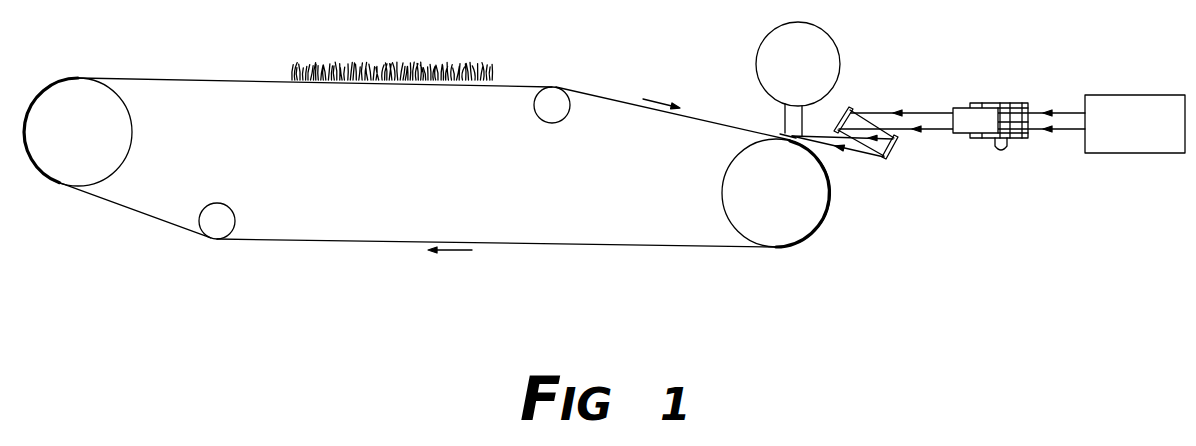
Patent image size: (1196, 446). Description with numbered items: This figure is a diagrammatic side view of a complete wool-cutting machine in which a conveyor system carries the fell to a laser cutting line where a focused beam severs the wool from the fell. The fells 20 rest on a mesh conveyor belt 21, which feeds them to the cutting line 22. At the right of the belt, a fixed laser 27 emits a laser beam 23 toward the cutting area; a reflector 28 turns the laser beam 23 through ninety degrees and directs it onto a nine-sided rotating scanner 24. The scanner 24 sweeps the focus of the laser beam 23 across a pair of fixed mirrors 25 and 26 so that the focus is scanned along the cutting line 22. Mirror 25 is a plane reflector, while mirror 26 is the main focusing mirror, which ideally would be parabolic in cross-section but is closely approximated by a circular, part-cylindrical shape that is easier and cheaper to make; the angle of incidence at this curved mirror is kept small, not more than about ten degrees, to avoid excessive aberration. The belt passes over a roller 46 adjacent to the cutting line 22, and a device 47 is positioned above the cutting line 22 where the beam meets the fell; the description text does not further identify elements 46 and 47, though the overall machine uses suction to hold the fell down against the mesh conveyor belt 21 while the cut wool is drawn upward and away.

The fells 20 is at (400, 67).
The mesh conveyor belt 21 is at (610, 98).
The cutting line 22 is at (776, 128).
The laser beam 23 is at (934, 112).
The rotating scanner 24 is at (1017, 105).
The plane reflector mirror 25 is at (851, 110).
The main focusing mirror 26 is at (895, 148).
The laser 27 is at (1123, 139).
The reflector 28 is at (967, 127).
The roller 46 is at (797, 245).
The nozzle 47 is at (840, 57).